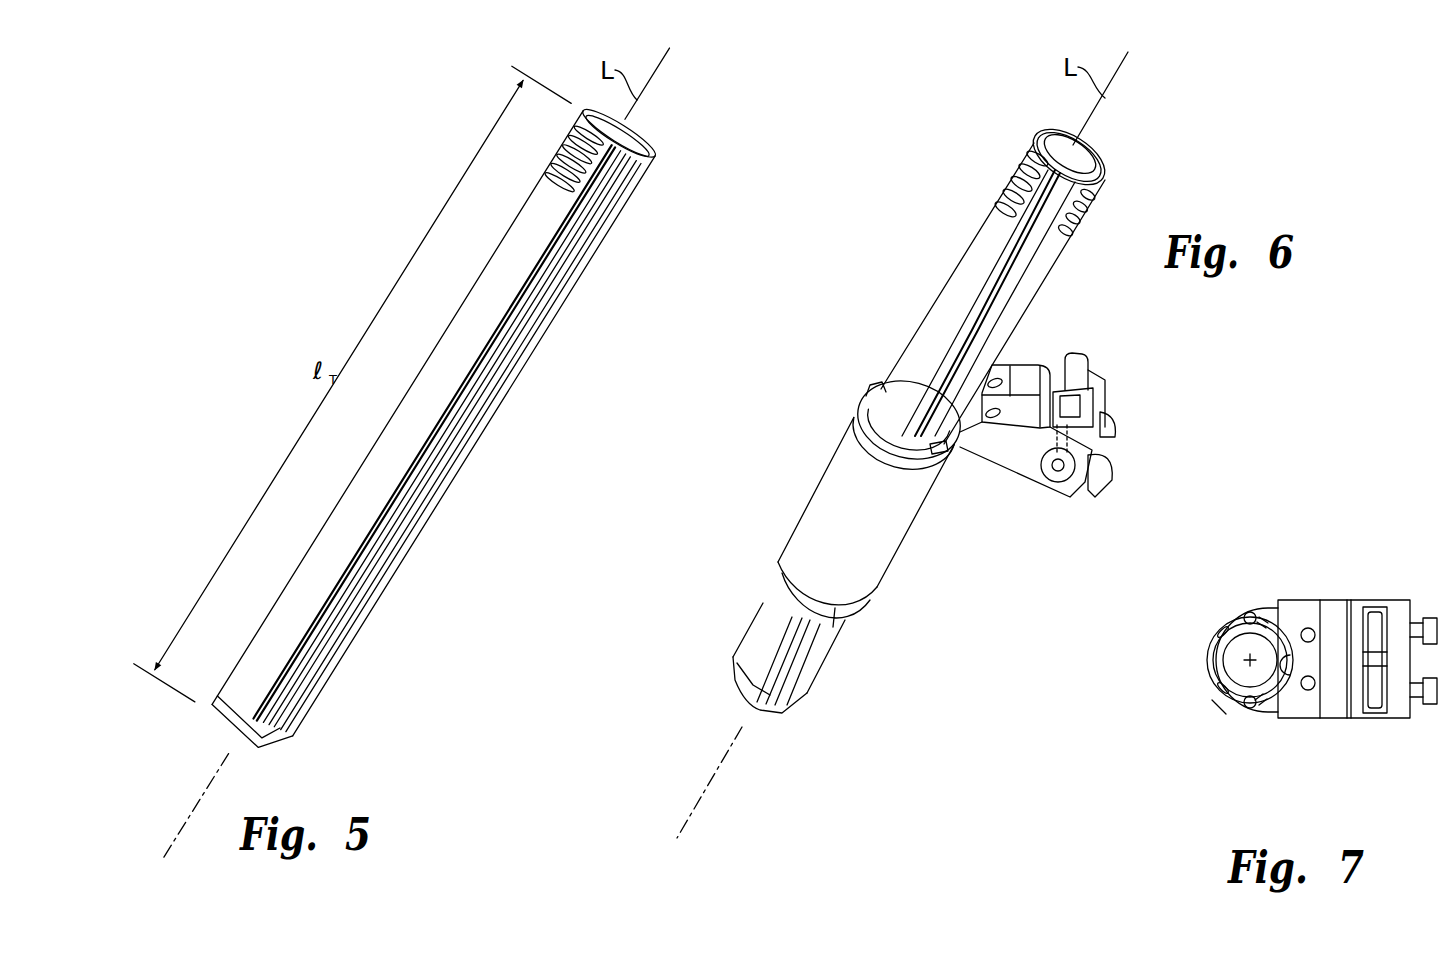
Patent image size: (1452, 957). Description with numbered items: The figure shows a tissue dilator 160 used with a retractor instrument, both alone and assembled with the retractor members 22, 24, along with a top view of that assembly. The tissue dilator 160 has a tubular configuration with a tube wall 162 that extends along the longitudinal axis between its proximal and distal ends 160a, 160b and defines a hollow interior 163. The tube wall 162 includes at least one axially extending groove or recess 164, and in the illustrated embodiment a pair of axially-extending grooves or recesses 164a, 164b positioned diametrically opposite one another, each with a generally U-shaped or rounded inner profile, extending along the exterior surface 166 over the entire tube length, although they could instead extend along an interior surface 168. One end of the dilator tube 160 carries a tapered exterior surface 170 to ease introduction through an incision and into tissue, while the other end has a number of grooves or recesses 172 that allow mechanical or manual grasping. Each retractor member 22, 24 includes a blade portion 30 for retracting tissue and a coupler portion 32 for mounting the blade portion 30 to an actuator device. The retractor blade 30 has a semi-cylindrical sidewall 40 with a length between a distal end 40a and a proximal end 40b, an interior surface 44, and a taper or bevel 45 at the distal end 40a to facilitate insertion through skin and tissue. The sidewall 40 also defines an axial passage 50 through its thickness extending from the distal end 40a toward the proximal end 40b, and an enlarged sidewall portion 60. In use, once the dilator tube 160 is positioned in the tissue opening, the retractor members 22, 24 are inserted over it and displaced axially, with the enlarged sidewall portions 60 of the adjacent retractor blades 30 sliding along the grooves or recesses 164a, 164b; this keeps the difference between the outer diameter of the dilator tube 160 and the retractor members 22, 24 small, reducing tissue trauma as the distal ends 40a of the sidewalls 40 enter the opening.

In FIG. 6, the retractor member 22 is at (1048, 355).
In FIG. 7, the retractor member 22 is at (1323, 590).
In FIG. 6, the retractor member 24 is at (1007, 488).
In FIG. 7, the retractor member 24 is at (1317, 738).
In FIG. 6, the blade portion 30 is at (878, 551).
In FIG. 7, the blade portion 30 is at (1237, 600).
In FIG. 6, the coupler portion 32 is at (1084, 425).
In FIG. 7, the coupler portion 32 is at (1370, 590).
In FIG. 6, the sidewall 40 is at (813, 490).
In FIG. 6, the distal end 40a is at (773, 559).
In FIG. 6, the proximal end 40b is at (857, 378).
In FIG. 6, the interior surface 44 is at (866, 410).
In FIG. 6, the bevel 45 is at (787, 588).
In FIG. 7, the axial passage 50 is at (1255, 614).
In FIG. 6, the enlarged sidewall portion 60 is at (903, 428).
In FIG. 7, the enlarged sidewall portion 60 is at (1227, 632).
In FIG. 5, the tissue dilator 160 is at (514, 417).
In FIG. 6, the tissue dilator 160 is at (942, 262).
In FIG. 7, the tissue dilator 160 is at (1220, 615).
In FIG. 5, the proximal end 160a is at (653, 175).
In FIG. 6, the proximal end 160a is at (1013, 153).
In FIG. 5, the distal end 160b is at (288, 749).
In FIG. 6, the distal end 160b is at (715, 680).
In FIG. 5, the tube wall 162 is at (503, 273).
In FIG. 6, the tube wall 162 is at (920, 357).
In FIG. 7, the tube wall 162 is at (1217, 655).
In FIG. 5, the hollow interior 163 is at (629, 127).
In FIG. 6, the hollow interior 163 is at (1074, 157).
In FIG. 7, the hollow interior 163 is at (1228, 662).
In FIG. 5, the groove 164 is at (414, 494).
In FIG. 6, the groove 164 is at (1004, 293).
In FIG. 7, the axially-extending groove 164a is at (1263, 617).
In FIG. 7, the axially-extending groove 164b is at (1258, 708).
In FIG. 5, the exterior surface 166 is at (447, 382).
In FIG. 6, the exterior surface 166 is at (950, 320).
In FIG. 7, the exterior surface 166 is at (1223, 711).
In FIG. 6, the interior surface 168 is at (1047, 140).
In FIG. 7, the interior surface 168 is at (1273, 714).
In FIG. 5, the tapered exterior surface 170 is at (227, 717).
In FIG. 6, the tapered exterior surface 170 is at (750, 694).
In FIG. 5, the grooves 172 is at (553, 134).
In FIG. 6, the grooves 172 is at (1090, 207).